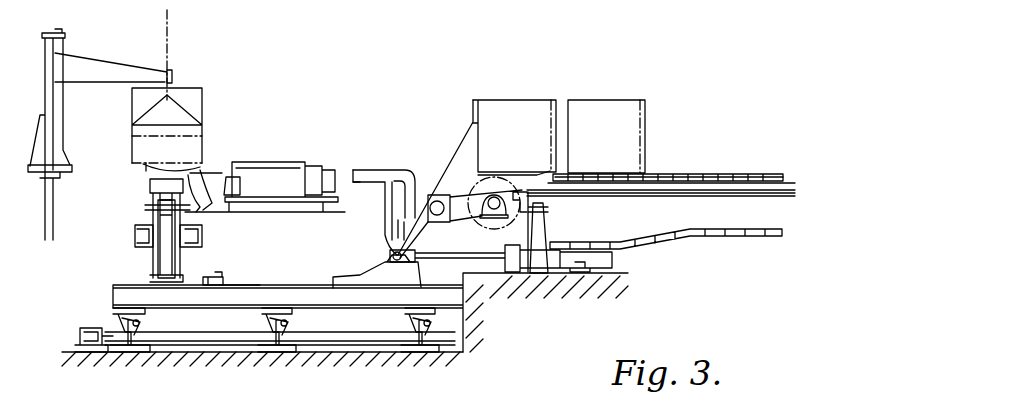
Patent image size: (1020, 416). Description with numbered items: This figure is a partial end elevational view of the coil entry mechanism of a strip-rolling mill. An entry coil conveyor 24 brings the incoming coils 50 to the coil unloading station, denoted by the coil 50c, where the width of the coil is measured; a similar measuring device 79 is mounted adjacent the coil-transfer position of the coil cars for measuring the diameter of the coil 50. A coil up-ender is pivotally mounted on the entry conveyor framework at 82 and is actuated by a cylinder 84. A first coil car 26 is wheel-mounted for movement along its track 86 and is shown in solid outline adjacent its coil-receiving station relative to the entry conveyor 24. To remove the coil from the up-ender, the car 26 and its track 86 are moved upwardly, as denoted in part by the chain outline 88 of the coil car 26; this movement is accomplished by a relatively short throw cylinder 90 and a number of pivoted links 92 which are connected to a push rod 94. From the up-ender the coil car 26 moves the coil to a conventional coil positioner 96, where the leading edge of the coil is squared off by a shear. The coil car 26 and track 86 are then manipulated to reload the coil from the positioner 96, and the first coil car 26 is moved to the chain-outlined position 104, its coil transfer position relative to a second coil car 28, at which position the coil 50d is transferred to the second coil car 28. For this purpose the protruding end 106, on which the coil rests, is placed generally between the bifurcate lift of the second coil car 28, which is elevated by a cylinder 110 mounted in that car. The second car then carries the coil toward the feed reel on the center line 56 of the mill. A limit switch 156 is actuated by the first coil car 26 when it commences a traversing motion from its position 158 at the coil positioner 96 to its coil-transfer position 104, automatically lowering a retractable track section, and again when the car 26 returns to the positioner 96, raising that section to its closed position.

The measuring device 79 is at (97, 68).
The center line 56 is at (178, 32).
The coil 50d is at (203, 92).
The chain-outlined position 104 is at (208, 172).
The protruding end 106 is at (147, 168).
The coil positioner 96 is at (292, 172).
The second coil car 28 is at (165, 253).
The cylinder 110 is at (165, 256).
The track 86 is at (447, 298).
The push rod 94 is at (333, 340).
The pivoted links 92 is at (262, 315).
The short throw cylinder 90 is at (92, 326).
The limit switch 156 is at (216, 275).
The position 158 is at (220, 278).
The first coil car 26 is at (373, 168).
The chain outline 88 is at (407, 168).
The pivotal mounting 82 is at (434, 222).
The cylinder 84 is at (540, 258).
The coil 50c is at (517, 98).
The coil 50 is at (630, 100).
The entry coil conveyor 24 is at (693, 173).